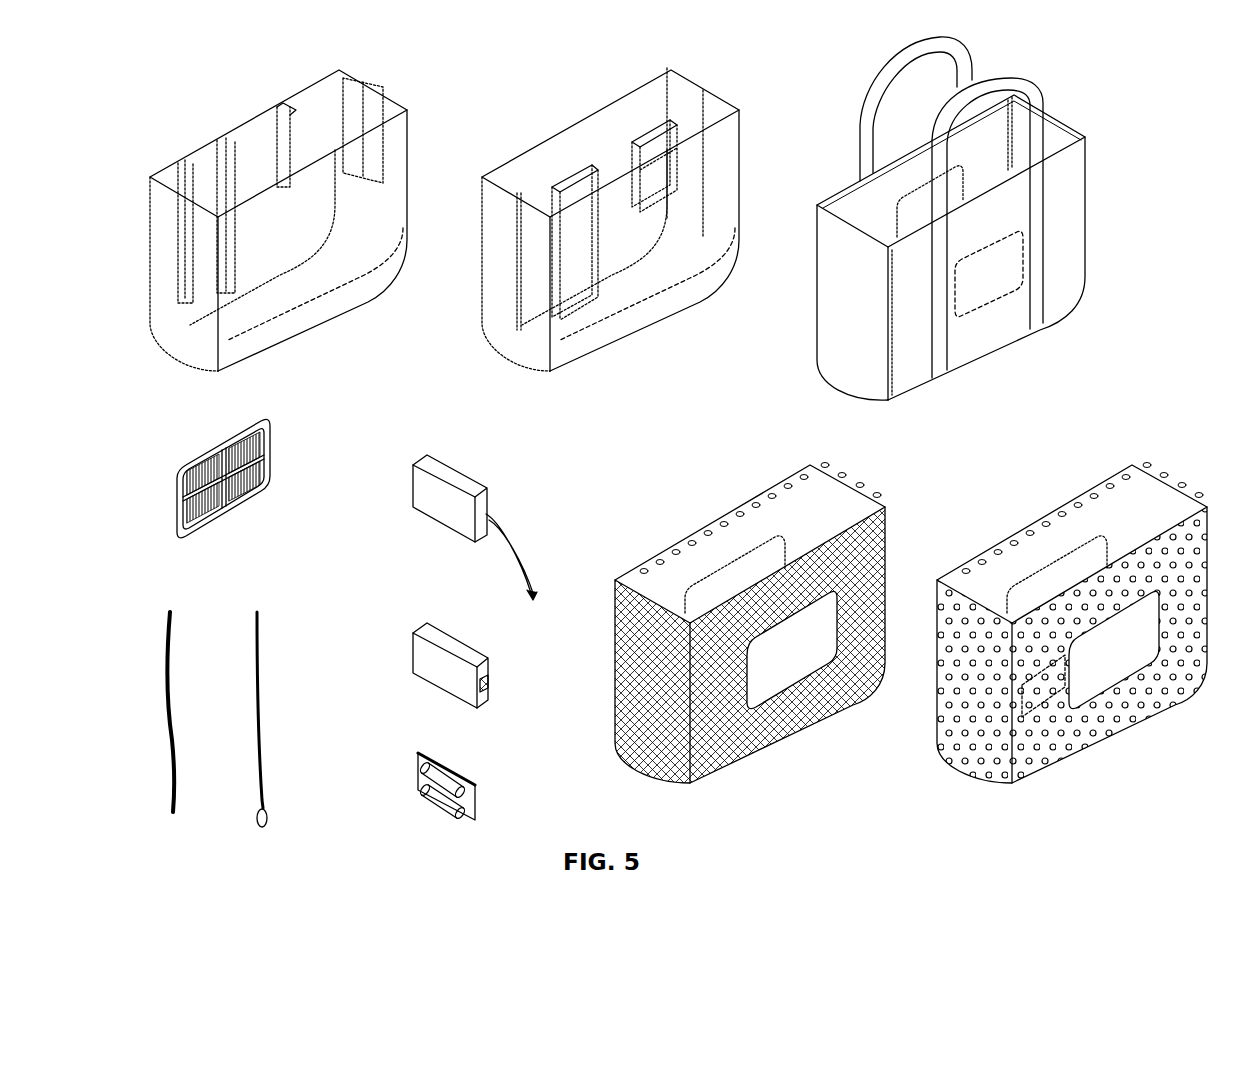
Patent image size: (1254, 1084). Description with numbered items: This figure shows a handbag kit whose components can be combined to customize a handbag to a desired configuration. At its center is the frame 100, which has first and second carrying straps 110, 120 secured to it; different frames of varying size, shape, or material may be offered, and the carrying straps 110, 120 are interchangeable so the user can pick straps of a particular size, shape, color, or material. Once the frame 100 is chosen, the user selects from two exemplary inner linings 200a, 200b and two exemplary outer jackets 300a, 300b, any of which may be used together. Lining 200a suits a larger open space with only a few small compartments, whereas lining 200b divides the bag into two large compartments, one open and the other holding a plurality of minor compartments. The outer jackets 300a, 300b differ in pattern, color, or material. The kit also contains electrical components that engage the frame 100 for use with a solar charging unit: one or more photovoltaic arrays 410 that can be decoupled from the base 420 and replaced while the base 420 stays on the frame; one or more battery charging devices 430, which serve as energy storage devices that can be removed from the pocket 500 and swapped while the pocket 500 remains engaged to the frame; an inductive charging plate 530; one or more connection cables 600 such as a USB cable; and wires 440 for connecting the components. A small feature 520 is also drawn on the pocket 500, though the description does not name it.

The frame 100 is at (968, 218).
The first carrying strap 110 is at (1030, 93).
The second carrying strap 120 is at (860, 122).
The inner lining 200a is at (235, 93).
The inner lining 200b is at (565, 93).
The outer jacket 300a is at (780, 730).
The outer jacket 300b is at (1112, 727).
The photovoltaic array 410 is at (250, 490).
The base 420 is at (258, 482).
The battery charging device 430 is at (422, 773).
The wires 440 is at (162, 685).
The pocket 500 is at (482, 650).
The connector port 520 is at (490, 685).
The inductive charging plate 530 is at (452, 475).
The connection cable 600 is at (255, 703).